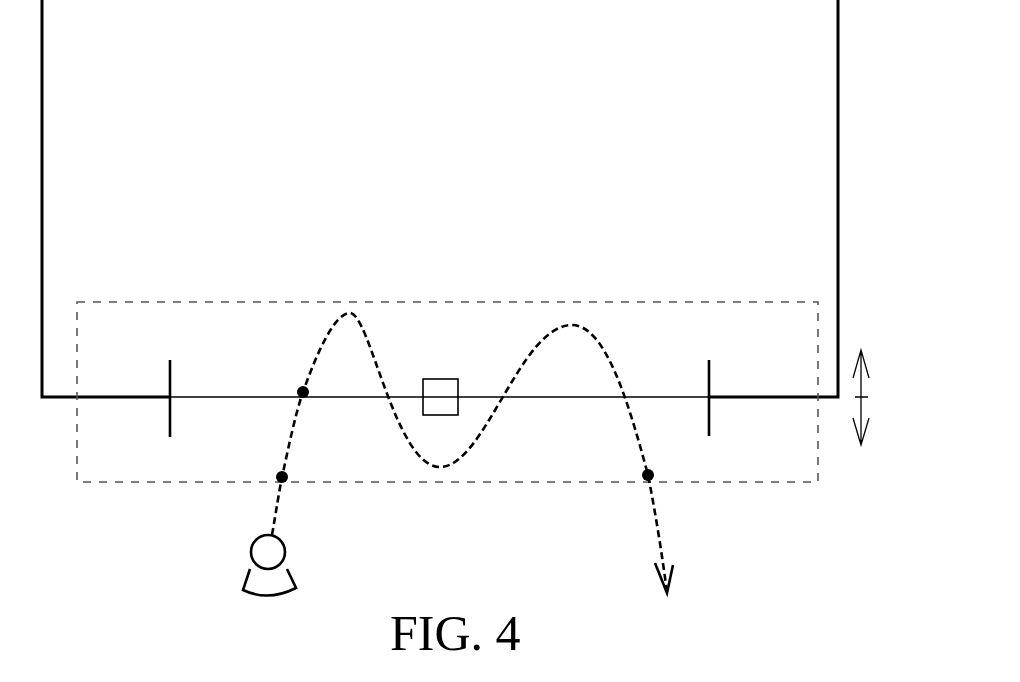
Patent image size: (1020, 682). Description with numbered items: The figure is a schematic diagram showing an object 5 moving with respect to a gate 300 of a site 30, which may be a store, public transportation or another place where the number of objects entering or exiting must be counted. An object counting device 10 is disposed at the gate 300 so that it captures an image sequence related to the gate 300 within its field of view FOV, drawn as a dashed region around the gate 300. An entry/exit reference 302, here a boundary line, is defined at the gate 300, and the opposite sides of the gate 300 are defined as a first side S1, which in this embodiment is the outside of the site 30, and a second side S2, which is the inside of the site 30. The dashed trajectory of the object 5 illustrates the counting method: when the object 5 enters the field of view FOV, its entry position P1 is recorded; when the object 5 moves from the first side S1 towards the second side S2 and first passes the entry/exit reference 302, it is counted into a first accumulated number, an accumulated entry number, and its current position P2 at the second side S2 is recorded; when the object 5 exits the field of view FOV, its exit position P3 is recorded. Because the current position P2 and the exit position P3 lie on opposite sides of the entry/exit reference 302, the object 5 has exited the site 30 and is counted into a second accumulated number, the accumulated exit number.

The object 5 is at (255, 578).
The object counting device 10 is at (440, 379).
The site 30 is at (839, 197).
The gate 300 is at (548, 473).
The entry/exit reference 302 is at (218, 397).
The field of view FOV is at (257, 302).
The entry position P1 is at (264, 468).
The current position P2 is at (284, 380).
The exit position P3 is at (629, 468).
The first side S1 is at (880, 425).
The second side S2 is at (880, 372).